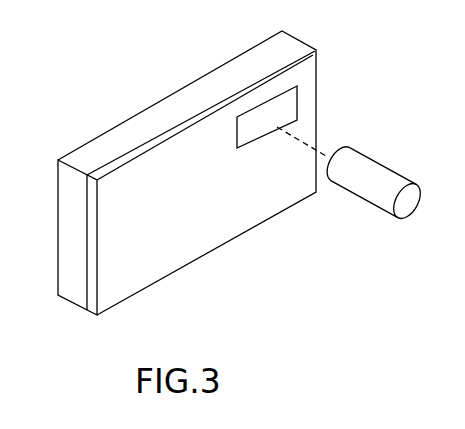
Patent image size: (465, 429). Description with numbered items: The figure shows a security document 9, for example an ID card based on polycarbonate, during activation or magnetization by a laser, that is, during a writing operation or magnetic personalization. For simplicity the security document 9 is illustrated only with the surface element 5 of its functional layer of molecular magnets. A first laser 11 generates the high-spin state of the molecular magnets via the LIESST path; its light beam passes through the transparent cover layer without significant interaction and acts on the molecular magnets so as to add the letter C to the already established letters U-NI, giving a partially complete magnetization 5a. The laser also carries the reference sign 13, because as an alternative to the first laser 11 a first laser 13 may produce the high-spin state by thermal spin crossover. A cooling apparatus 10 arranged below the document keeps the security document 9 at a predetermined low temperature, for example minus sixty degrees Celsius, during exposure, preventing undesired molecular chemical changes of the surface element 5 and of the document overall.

The surface element 5 is at (313, 91).
The partially complete magnetization 5a is at (272, 120).
The security document 9 is at (106, 299).
The cooling apparatus 10 is at (76, 296).
The first laser 11 is at (395, 162).
The first laser 13 is at (375, 168).